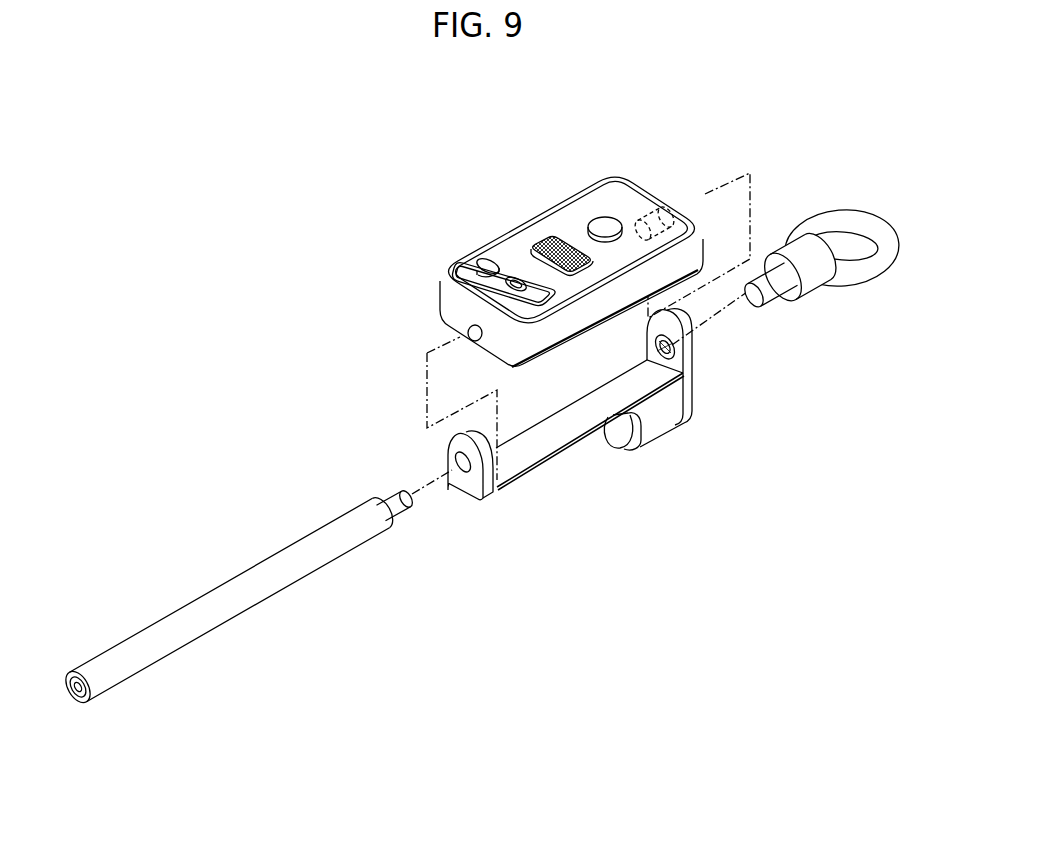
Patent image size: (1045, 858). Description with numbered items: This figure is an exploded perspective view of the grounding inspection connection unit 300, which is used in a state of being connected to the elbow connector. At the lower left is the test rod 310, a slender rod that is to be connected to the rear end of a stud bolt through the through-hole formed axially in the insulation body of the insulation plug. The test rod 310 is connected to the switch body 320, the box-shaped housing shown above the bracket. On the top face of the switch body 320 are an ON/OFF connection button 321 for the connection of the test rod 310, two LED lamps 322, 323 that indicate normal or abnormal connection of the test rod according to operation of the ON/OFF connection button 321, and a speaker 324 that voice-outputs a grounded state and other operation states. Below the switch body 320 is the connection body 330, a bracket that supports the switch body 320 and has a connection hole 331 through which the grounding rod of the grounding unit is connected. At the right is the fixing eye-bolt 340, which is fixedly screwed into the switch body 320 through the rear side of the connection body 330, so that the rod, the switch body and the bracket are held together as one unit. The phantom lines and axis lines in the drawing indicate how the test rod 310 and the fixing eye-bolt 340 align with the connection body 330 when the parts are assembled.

The grounding inspection connection unit 300 is at (308, 404).
The test rod 310 is at (248, 597).
The switch body 320 is at (570, 225).
The ON/OFF connection button 321 is at (600, 215).
The LED lamp 322 is at (477, 262).
The LED lamp 323 is at (508, 287).
The speaker 324 is at (543, 240).
The connection body 330 is at (570, 404).
The connection hole 331 is at (617, 441).
The fixing eye-bolt 340 is at (812, 282).